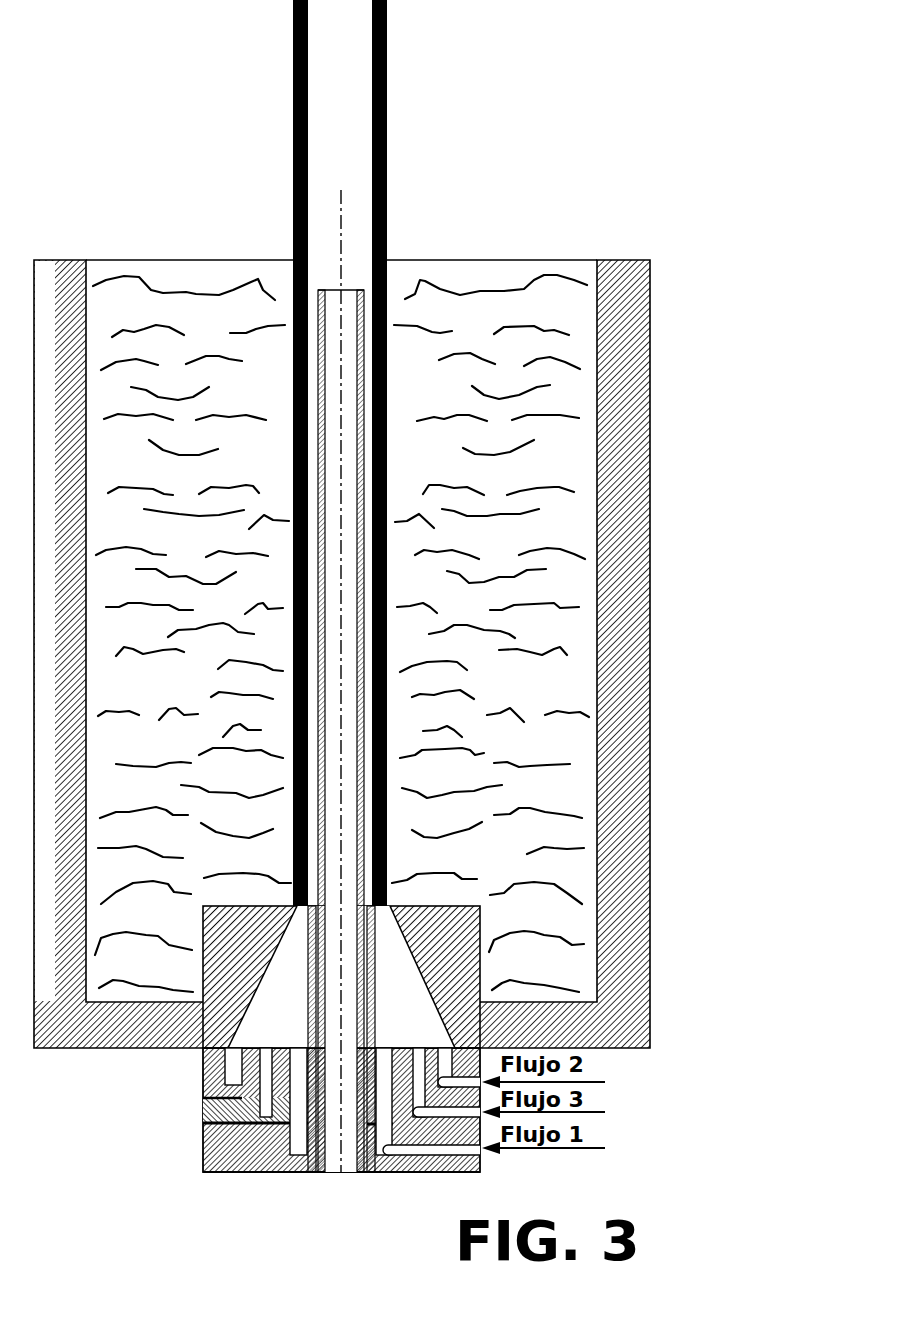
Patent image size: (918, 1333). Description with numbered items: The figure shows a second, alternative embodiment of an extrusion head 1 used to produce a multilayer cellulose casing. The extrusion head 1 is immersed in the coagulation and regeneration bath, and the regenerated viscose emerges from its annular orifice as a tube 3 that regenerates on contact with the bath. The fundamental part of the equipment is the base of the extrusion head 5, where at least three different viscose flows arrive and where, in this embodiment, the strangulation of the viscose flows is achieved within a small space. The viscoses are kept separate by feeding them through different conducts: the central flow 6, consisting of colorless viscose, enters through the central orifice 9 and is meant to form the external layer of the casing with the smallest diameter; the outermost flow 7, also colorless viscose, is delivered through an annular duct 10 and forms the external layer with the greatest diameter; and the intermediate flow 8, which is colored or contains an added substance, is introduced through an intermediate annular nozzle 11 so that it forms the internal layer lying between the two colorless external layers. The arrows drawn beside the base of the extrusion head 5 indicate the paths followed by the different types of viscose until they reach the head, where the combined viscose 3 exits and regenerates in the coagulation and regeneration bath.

The extrusion head 1 is at (467, 967).
The tube of regenerated viscose 3 is at (387, 100).
The base of the extrusion head 5 is at (412, 1147).
The central flow 6 is at (553, 1150).
The outermost flow 7 is at (570, 1080).
The intermediate flow 8 is at (593, 1115).
The central orifice 9 is at (240, 1147).
The annular duct 10 is at (230, 1083).
The intermediate annular nozzle 11 is at (300, 1060).